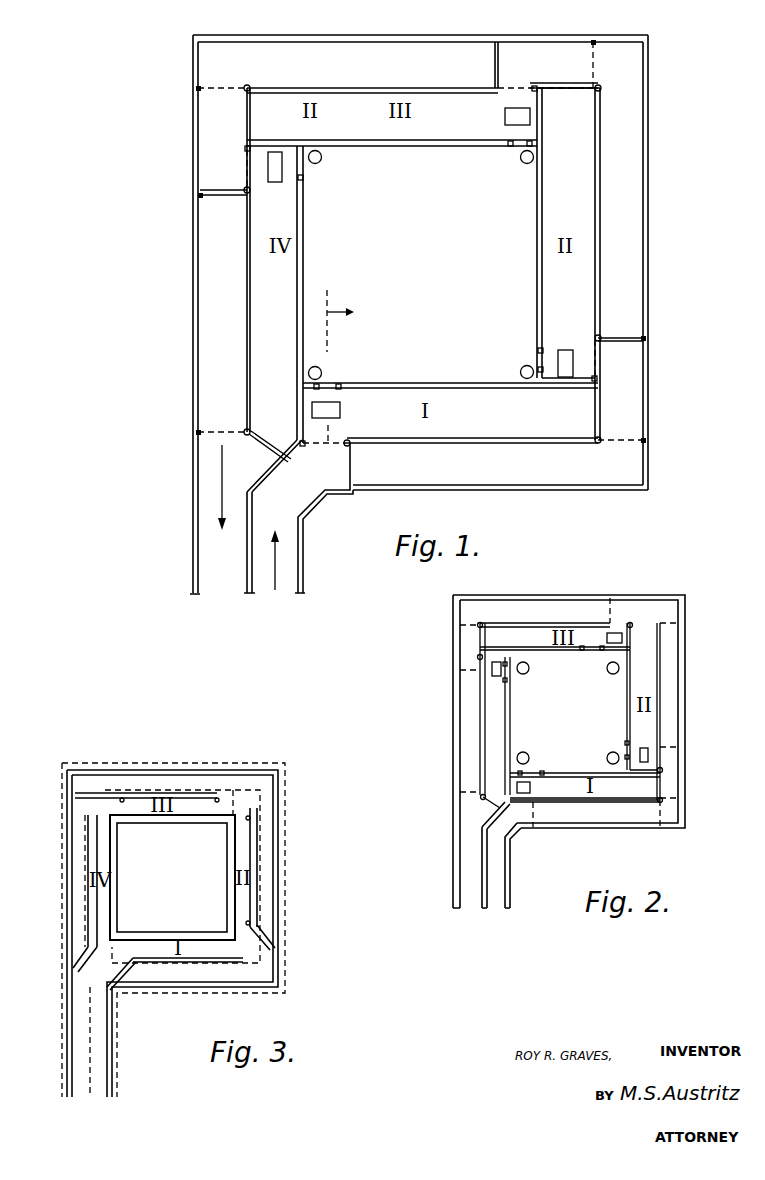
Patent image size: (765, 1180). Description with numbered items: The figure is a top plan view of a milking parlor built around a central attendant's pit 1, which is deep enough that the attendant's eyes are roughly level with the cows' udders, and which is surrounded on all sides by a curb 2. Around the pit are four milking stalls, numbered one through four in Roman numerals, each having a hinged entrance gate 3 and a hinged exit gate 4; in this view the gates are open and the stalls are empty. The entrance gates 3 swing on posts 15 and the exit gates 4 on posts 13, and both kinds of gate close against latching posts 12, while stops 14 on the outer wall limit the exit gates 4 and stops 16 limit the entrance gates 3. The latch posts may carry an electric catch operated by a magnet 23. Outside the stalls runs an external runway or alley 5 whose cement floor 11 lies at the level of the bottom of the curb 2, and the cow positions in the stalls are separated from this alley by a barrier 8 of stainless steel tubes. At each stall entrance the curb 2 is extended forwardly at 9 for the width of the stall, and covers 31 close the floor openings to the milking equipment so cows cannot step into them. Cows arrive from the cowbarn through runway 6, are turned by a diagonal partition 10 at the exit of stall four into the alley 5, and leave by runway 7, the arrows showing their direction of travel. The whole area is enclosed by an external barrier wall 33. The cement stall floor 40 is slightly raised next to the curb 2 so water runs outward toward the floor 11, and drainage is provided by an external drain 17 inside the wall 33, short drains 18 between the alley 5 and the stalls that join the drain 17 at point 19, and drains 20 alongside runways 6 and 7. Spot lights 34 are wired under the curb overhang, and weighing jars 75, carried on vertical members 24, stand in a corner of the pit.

In FIG. 1, the attendant's pit 1 is at (420, 270).
In FIG. 2, the attendant's pit 1 is at (570, 708).
In FIG. 3, the attendant's pit 1 is at (172, 877).
In FIG. 1, the curb 2 is at (413, 385).
In FIG. 2, the curb 2 is at (545, 711).
In FIG. 3, the curb 2 is at (168, 935).
In FIG. 1, the hinged entrance gate 3 is at (215, 190).
In FIG. 2, the hinged entrance gate 3 is at (444, 657).
In FIG. 1, the hinged exit gate 4 is at (247, 125).
In FIG. 2, the hinged exit gate 4 is at (480, 637).
In FIG. 1, the external runway 5 is at (343, 468).
In FIG. 2, the external runway 5 is at (568, 709).
In FIG. 3, the external runway 5 is at (151, 875).
In FIG. 1, the runway 6 is at (281, 590).
In FIG. 2, the runway 6 is at (497, 885).
In FIG. 1, the runway 7 is at (226, 590).
In FIG. 2, the runway 7 is at (470, 862).
In FIG. 1, the barrier 8 is at (408, 90).
In FIG. 2, the barrier 8 is at (690, 690).
In FIG. 1, the forward extension of curb 9 is at (300, 140).
In FIG. 2, the forward extension of curb 9 is at (445, 782).
In FIG. 1, the diagonal partition 10 is at (262, 480).
In FIG. 1, the cement floor of runway 11 is at (265, 48).
In FIG. 1, the latching post 12 is at (244, 153).
In FIG. 1, the post 13 is at (250, 88).
In FIG. 2, the post 13 is at (570, 713).
In FIG. 1, the stop 14 is at (195, 100).
In FIG. 1, the post 15 is at (495, 88).
In FIG. 1, the stop 16 is at (495, 40).
In FIG. 3, the stop 16 is at (90, 1060).
In FIG. 3, the external drain 17 is at (113, 768).
In FIG. 3, the short drain 18 is at (200, 793).
In FIG. 1, the connection point 19 is at (340, 316).
In FIG. 3, the connection point 19 is at (262, 936).
In FIG. 3, the drain 20 is at (68, 1040).
In FIG. 1, the magnet 23 is at (500, 490).
In FIG. 1, the vertical member 24 is at (282, 462).
In FIG. 1, the cover 31 is at (561, 350).
In FIG. 2, the cover 31 is at (440, 690).
In FIG. 1, the external barrier wall 33 is at (354, 37).
In FIG. 2, the external barrier wall 33 is at (617, 840).
In FIG. 3, the external barrier wall 33 is at (172, 766).
In FIG. 1, the spot light 34 is at (304, 177).
In FIG. 2, the spot light 34 is at (600, 651).
In FIG. 1, the cement floor of stalls 40 is at (400, 137).
In FIG. 1, the weighing jar 75 is at (322, 157).
In FIG. 2, the weighing jar 75 is at (530, 670).